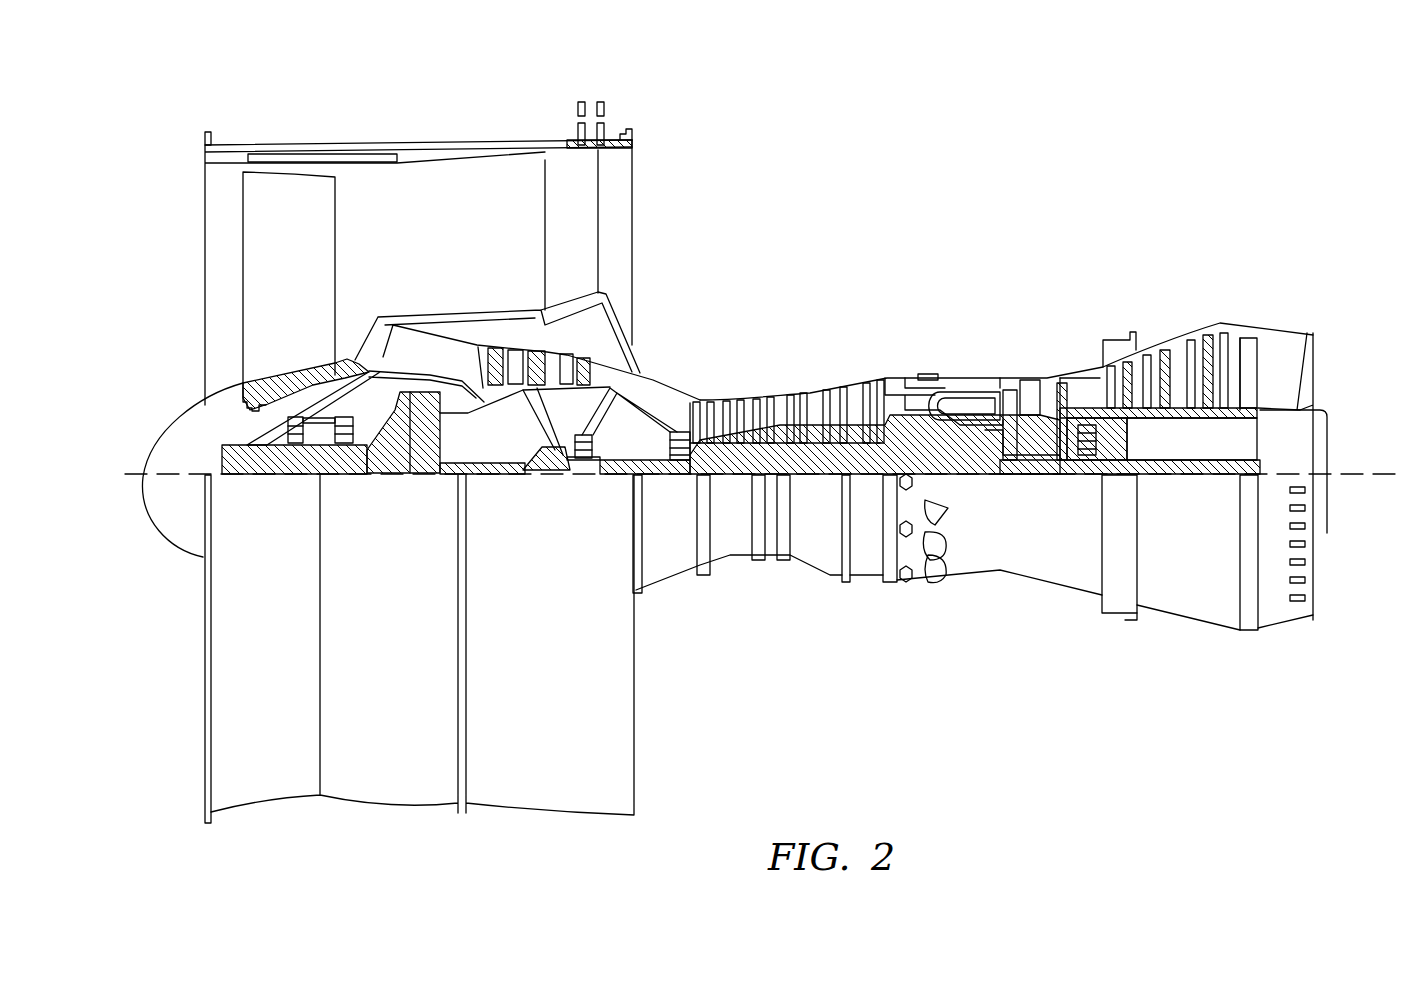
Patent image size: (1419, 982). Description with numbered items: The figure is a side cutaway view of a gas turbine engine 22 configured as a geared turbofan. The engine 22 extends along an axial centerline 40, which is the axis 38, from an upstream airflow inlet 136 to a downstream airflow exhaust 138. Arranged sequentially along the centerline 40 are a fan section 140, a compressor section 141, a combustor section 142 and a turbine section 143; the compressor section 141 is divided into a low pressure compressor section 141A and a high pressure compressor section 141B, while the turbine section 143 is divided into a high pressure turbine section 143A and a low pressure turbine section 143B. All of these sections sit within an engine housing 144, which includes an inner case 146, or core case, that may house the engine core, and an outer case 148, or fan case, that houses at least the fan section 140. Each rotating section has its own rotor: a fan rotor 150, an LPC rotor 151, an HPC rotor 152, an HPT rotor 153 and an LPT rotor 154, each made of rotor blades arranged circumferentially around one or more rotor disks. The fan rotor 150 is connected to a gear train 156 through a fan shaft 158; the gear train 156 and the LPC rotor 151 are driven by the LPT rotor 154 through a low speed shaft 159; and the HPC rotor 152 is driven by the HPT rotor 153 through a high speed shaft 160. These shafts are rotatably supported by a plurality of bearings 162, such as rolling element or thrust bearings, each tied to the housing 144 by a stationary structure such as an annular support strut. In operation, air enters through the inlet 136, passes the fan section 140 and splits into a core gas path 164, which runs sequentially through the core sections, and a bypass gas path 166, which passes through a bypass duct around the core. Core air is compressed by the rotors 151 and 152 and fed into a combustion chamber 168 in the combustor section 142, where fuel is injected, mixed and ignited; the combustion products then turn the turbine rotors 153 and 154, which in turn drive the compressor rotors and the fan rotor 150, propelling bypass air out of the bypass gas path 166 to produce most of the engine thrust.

The gas turbine engine 22 is at (172, 122).
The airflow inlet 136 is at (205, 218).
The airflow exhaust 138 is at (1318, 366).
The fan section 140 is at (385, 112).
The compressor section 141 is at (865, 55).
The low pressure compressor section 141A is at (635, 103).
The high pressure compressor section 141B is at (865, 305).
The combustor section 142 is at (995, 305).
The turbine section 143 is at (1275, 228).
The high pressure turbine section 143A is at (1080, 305).
The low pressure turbine section 143B is at (1275, 305).
The engine housing 144 is at (670, 610).
The inner case 146 is at (866, 580).
The outer case 148 is at (587, 817).
The fan rotor 150 is at (243, 400).
The LPC rotor 151 is at (545, 422).
The HPC rotor 152 is at (810, 435).
The HPT rotor 153 is at (1026, 452).
The LPT rotor 154 is at (1180, 416).
The gear train 156 is at (420, 476).
The fan shaft 158 is at (273, 476).
The low speed shaft 159 is at (1196, 478).
The high speed shaft 160 is at (958, 455).
The bearings 162 is at (318, 452).
The core gas path 164 is at (657, 398).
The bypass gas path 166 is at (470, 251).
The combustion chamber 168 is at (957, 408).
The axis 38 is at (1319, 552).
The axial centerline 40 is at (1378, 492).